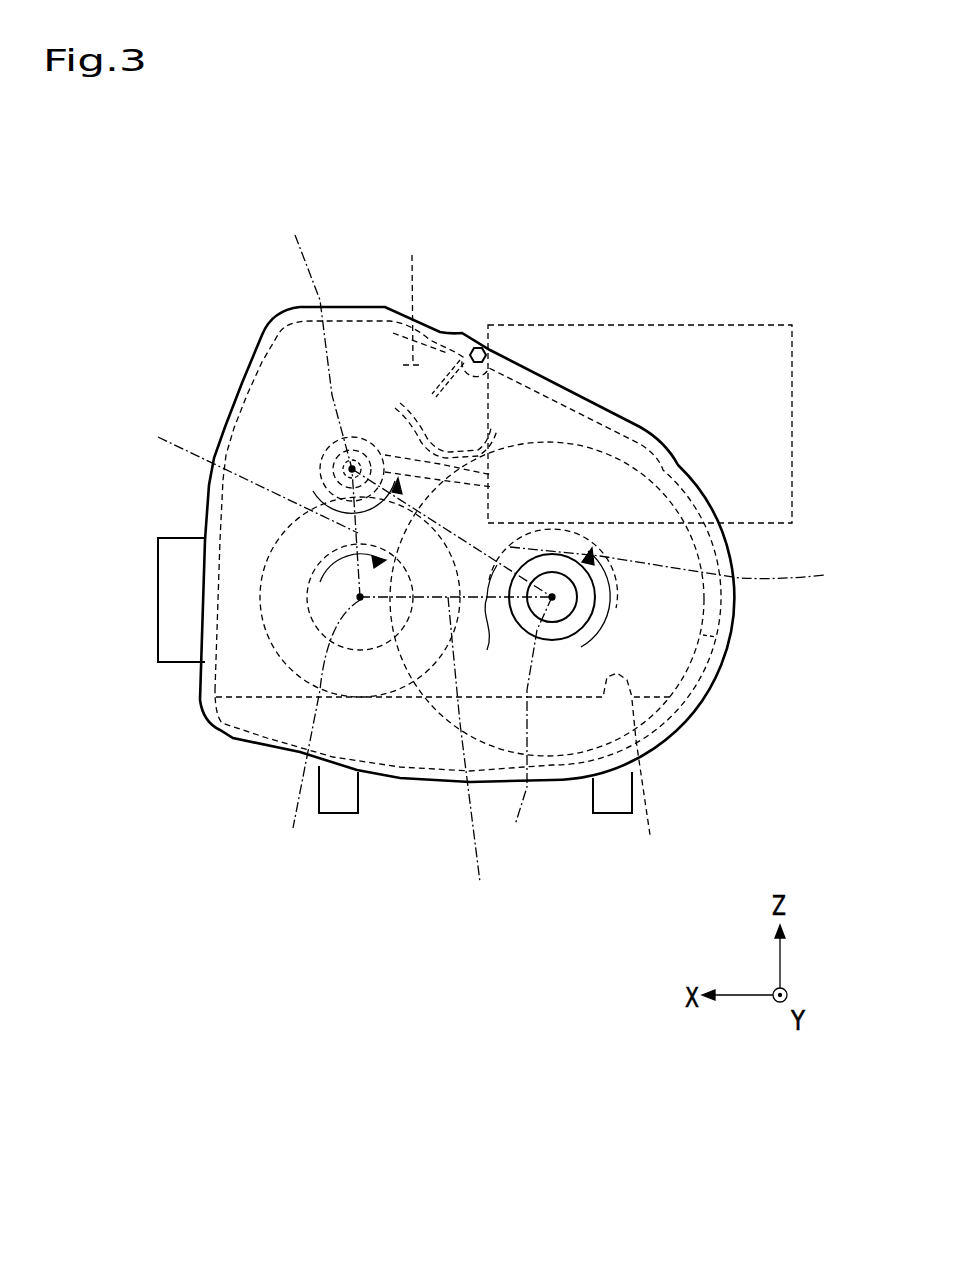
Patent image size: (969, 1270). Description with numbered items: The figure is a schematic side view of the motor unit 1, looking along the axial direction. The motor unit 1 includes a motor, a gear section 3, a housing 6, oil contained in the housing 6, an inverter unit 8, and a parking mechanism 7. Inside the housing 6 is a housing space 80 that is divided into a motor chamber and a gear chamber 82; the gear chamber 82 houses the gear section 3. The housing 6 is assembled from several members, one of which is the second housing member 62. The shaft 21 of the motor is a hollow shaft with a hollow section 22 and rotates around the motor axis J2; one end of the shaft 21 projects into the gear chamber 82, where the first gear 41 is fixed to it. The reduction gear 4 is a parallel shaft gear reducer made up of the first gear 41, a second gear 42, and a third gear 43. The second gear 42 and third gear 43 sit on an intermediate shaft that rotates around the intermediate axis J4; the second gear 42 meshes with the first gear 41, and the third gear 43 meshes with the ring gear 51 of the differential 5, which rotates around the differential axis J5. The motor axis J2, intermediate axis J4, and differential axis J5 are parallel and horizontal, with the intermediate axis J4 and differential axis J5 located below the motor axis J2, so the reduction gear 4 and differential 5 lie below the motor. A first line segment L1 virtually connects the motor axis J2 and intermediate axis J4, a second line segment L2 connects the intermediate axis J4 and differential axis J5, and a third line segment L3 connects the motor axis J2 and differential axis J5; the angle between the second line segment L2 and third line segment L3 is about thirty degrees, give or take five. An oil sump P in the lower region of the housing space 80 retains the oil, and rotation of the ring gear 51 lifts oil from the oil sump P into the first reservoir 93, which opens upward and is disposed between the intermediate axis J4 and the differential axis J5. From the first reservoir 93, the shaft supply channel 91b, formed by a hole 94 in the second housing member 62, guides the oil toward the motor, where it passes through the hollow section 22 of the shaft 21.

The motor unit 1 is at (684, 210).
The gear section 3 is at (300, 356).
The reduction gear 4 is at (289, 670).
The differential 5 is at (679, 699).
The housing 6 is at (640, 426).
The parking mechanism 7 is at (158, 583).
The inverter unit 8 is at (792, 350).
The shaft 21 is at (338, 440).
The hollow section 22 is at (332, 452).
The first gear 41 is at (320, 473).
The second gear 42 is at (299, 676).
The third gear 43 is at (400, 565).
The ring gear 51 is at (712, 645).
The second housing member 62 is at (682, 476).
The housing space 80 is at (390, 364).
The gear chamber 82 is at (413, 295).
The shaft supply channel 91b is at (492, 487).
The first reservoir 93 is at (500, 431).
The hole 94 is at (392, 447).
The motor axis J2 is at (342, 360).
The intermediate axis J4 is at (319, 663).
The differential axis J5 is at (554, 702).
The first line segment L1 is at (245, 477).
The second line segment L2 is at (456, 753).
The third line segment L3 is at (601, 571).
The oil sump P is at (646, 779).